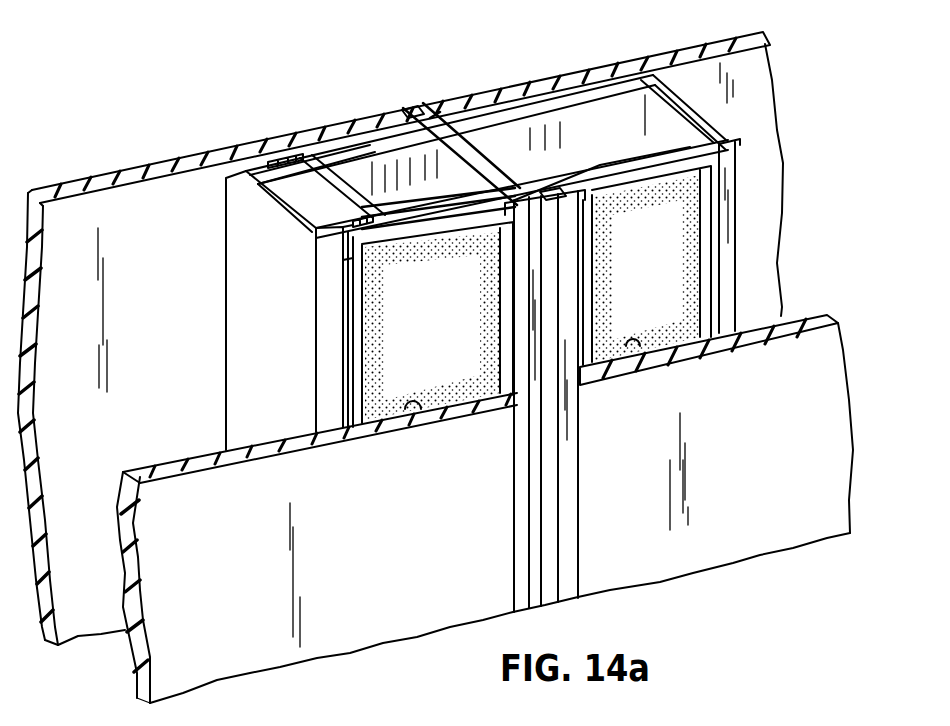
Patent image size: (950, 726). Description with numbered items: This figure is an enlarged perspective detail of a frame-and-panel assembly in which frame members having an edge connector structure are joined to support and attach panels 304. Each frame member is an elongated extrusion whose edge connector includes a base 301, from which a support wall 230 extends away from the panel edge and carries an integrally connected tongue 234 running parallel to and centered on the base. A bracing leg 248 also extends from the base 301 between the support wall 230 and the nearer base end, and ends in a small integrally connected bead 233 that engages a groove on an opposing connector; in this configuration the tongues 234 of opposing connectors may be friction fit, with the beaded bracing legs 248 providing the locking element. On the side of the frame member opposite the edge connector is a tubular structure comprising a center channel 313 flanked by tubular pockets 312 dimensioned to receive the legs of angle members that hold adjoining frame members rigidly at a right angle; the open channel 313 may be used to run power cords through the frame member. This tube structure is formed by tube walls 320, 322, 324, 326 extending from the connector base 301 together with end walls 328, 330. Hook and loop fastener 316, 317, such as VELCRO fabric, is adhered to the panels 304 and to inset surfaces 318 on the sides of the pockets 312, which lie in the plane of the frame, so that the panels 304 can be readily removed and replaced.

The base 301 is at (572, 520).
The panel 304 is at (172, 251).
The tubular pocket 312 is at (372, 137).
The center channel 313 is at (384, 165).
The hook and loop fastener 316 is at (437, 352).
The hook and loop fastener 317 is at (412, 411).
The inset surface 318 is at (350, 308).
The tube wall 320 is at (342, 262).
The tube wall 322 is at (345, 200).
The tube wall 324 is at (282, 193).
The tube wall 326 is at (266, 142).
The end wall 328 is at (322, 333).
The end wall 330 is at (745, 155).
The support wall 230 is at (388, 240).
The bead 233 is at (440, 110).
The tongue 234 is at (522, 158).
The bracing leg 248 is at (410, 112).